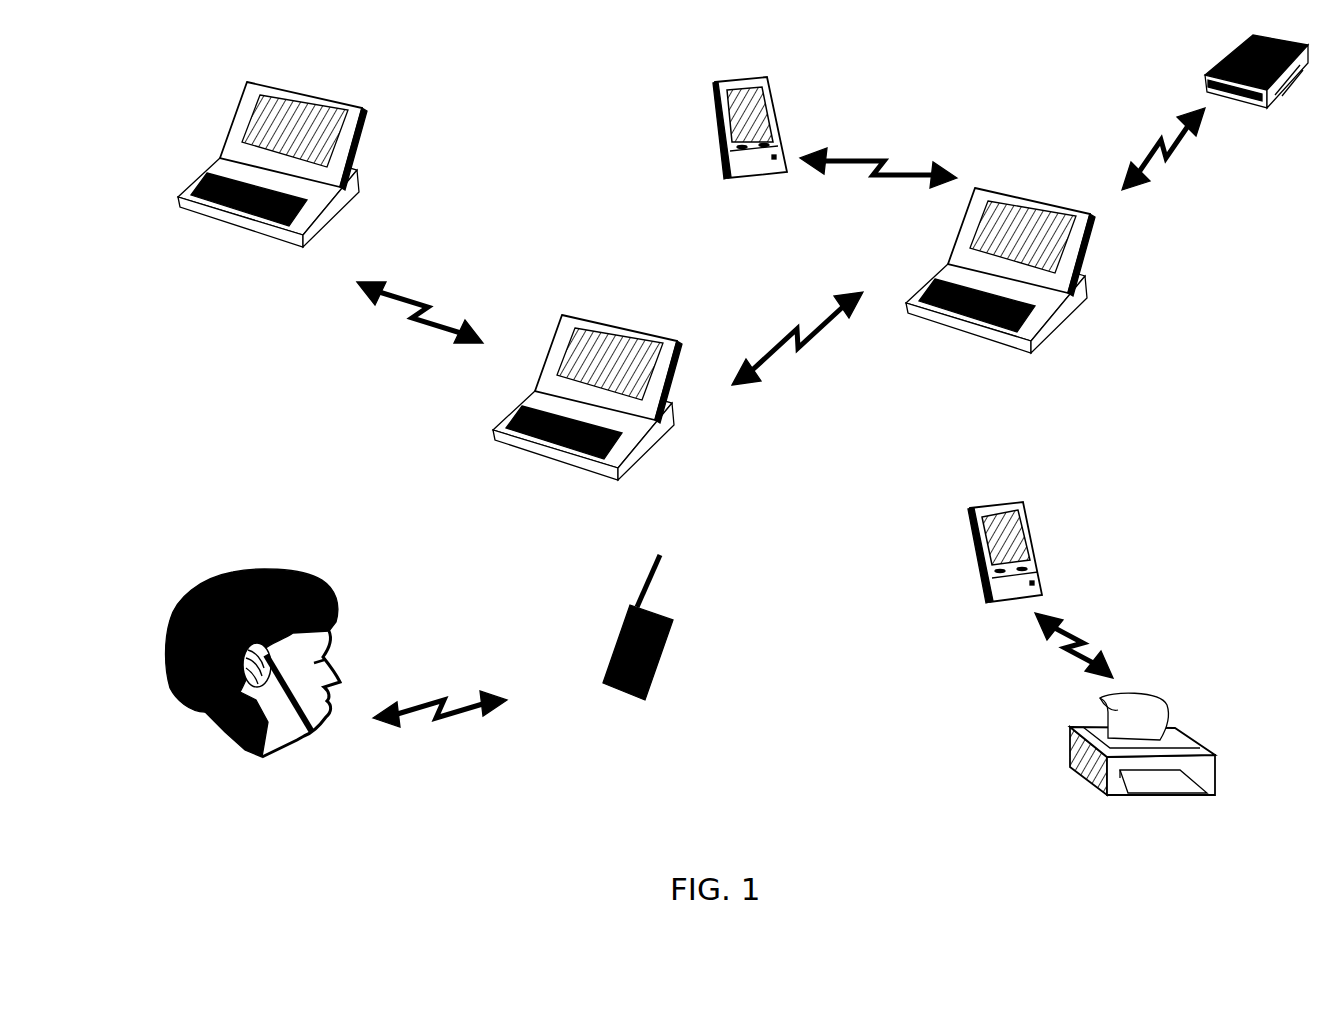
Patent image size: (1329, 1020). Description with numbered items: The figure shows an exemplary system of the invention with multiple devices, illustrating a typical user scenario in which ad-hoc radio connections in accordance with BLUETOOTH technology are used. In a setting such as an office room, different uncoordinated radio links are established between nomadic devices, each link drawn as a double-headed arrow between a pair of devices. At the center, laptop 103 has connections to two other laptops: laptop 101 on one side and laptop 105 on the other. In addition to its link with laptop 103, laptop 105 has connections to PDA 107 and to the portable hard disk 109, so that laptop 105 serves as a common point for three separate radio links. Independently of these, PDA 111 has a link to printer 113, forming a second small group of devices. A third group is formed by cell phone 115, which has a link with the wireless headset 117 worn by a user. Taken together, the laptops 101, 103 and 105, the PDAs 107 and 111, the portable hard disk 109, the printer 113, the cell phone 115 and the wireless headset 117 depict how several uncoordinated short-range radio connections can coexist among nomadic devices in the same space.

The laptop 101 is at (362, 177).
The laptop 103 is at (620, 322).
The laptop 105 is at (1013, 193).
The PDA 107 is at (715, 128).
The portable hard disk 109 is at (1247, 105).
The PDA 111 is at (1007, 503).
The printer 113 is at (1193, 740).
The cell phone 115 is at (673, 622).
The wireless headset 117 is at (320, 583).